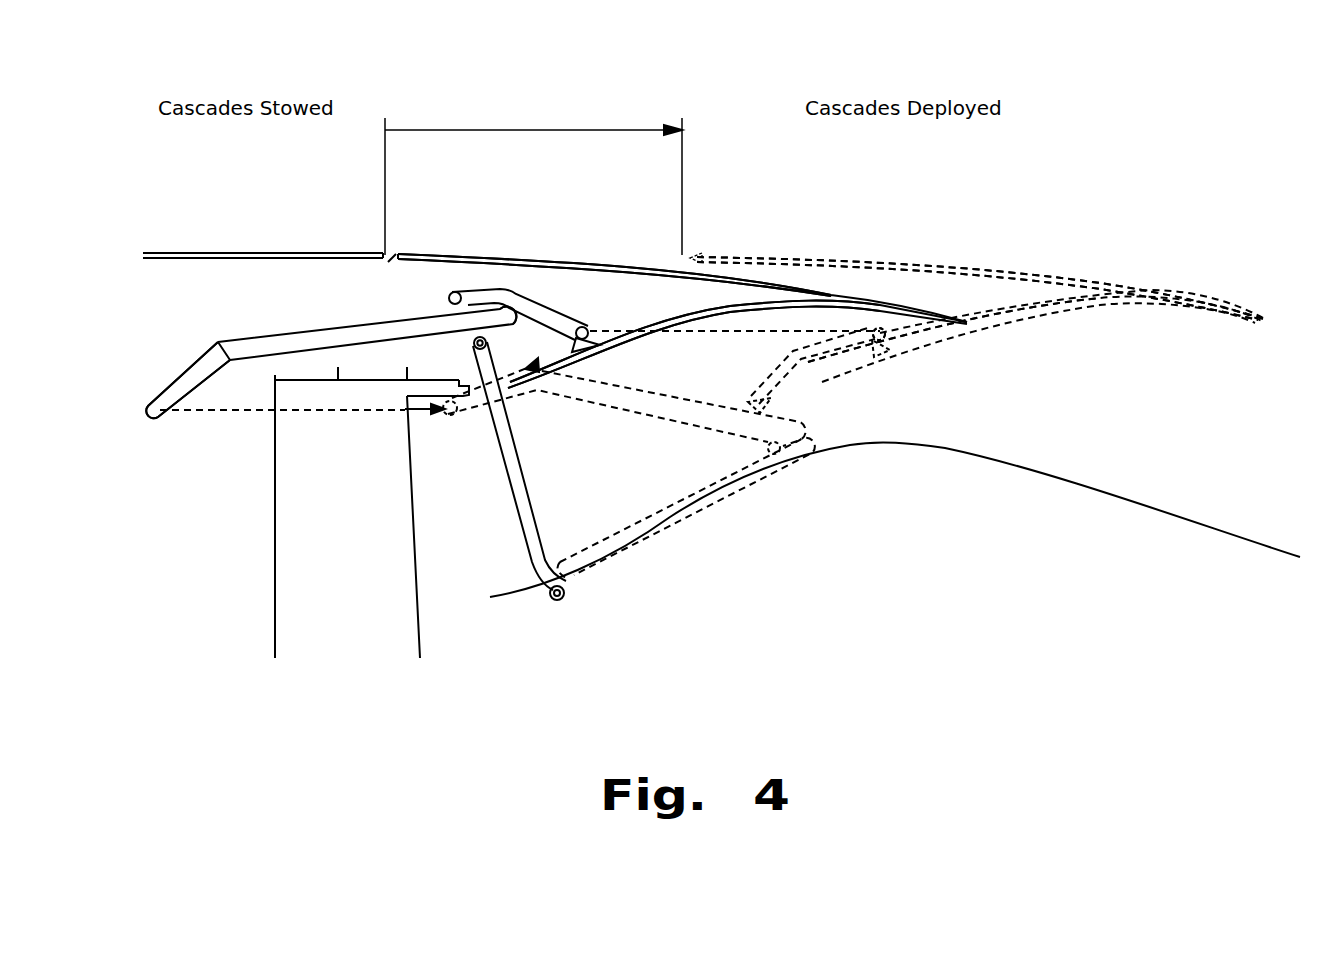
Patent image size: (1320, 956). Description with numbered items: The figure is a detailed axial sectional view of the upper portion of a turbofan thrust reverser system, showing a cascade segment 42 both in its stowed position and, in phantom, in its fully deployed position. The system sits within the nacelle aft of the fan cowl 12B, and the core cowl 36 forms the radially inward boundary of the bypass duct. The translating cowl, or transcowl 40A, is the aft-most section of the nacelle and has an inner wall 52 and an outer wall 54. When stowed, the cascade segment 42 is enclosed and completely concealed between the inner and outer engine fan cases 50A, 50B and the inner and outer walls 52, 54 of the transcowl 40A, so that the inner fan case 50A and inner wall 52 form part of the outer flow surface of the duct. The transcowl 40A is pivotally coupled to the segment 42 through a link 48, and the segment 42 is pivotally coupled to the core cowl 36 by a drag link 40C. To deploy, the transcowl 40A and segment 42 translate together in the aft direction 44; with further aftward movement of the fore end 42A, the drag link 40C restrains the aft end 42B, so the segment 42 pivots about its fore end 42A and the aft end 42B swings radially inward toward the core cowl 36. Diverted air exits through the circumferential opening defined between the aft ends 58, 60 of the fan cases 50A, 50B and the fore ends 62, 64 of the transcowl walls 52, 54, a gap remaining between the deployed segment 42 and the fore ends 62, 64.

The fan cowl 12B is at (214, 244).
The core cowl 36 is at (1046, 465).
The translating cowl (transcowl) 40A is at (887, 297).
The drag link 40C is at (520, 540).
The cascade segment 42 is at (228, 325).
The fore end 42A is at (173, 383).
The aft end 42B is at (498, 318).
The aft direction 44 is at (553, 130).
The link 48 is at (781, 371).
The inner engine fan case 50A is at (350, 378).
The outer engine fan case 50B is at (315, 254).
The inner wall 52 is at (626, 346).
The outer wall 54 is at (582, 257).
The aft end 58 is at (460, 385).
The aft end 60 is at (387, 262).
The fore end 62 is at (828, 380).
The fore end 64 is at (405, 256).